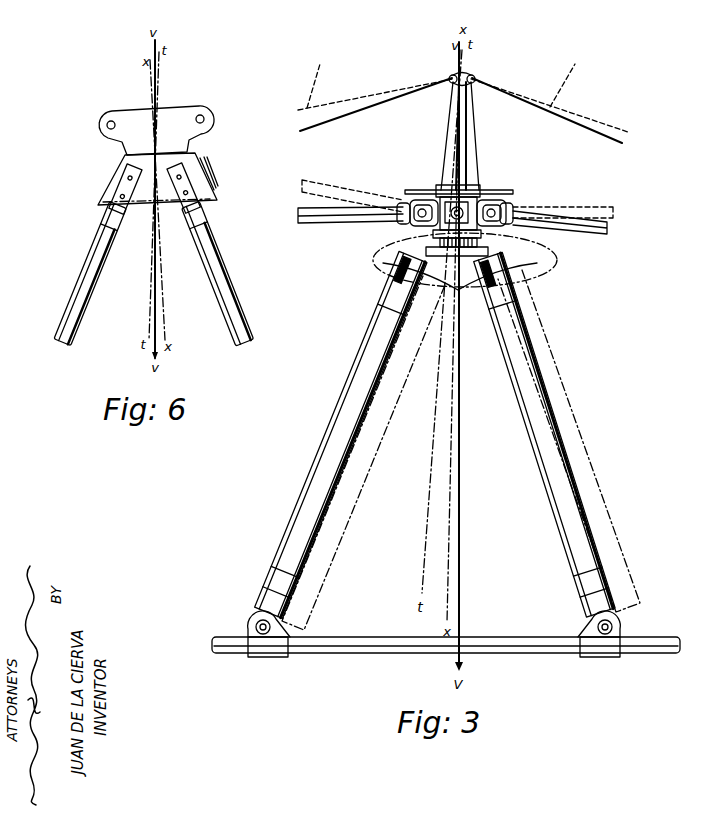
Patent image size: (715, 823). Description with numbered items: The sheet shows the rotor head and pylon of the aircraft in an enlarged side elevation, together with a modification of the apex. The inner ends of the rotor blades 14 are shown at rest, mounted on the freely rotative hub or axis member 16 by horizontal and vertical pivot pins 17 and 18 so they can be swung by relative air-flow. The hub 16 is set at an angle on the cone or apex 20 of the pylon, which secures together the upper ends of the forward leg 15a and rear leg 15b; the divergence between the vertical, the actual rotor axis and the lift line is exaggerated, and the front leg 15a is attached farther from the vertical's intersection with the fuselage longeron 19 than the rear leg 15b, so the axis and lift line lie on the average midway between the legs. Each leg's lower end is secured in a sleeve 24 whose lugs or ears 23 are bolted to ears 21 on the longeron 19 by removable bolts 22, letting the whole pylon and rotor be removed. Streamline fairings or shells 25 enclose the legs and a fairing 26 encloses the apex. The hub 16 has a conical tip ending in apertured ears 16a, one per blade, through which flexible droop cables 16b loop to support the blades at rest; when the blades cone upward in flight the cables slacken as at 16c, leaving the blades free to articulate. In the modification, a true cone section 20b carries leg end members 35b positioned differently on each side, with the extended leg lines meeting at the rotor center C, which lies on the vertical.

In FIG. 3, the rotative sustaining wings or blades 14 is at (325, 222).
In FIG. 3, the forward leg of the pylon 15a is at (389, 329).
In FIG. 3, the rear leg of the pylon 15b is at (518, 352).
In FIG. 3, the rotor hub or axis member 16 is at (472, 168).
In FIG. 6, the rotor hub or axis member 16 is at (174, 118).
In FIG. 3, the apertured ears 16a is at (549, 68).
In FIG. 3, the flexible droop cables 16b is at (343, 116).
In FIG. 3, the slackened cable position 16c is at (316, 72).
In FIG. 3, the horizontal pivot pin 17 is at (412, 200).
In FIG. 3, the vertical pivot pin 18 is at (419, 205).
In FIG. 3, the center of the rotor C is at (462, 210).
In FIG. 6, the center of the rotor C is at (153, 124).
In FIG. 3, the fuselage longeron 19 is at (530, 652).
In FIG. 3, the cone or apex of the pylon 20 is at (553, 268).
In FIG. 6, the true cone section 20b is at (110, 188).
In FIG. 3, the ears 21 is at (262, 656).
In FIG. 3, the removable bolts 22 is at (254, 624).
In FIG. 3, the lugs or ears of sleeves 23 is at (258, 614).
In FIG. 3, the sleeves 24 is at (270, 598).
In FIG. 3, the streamline fairings or shells for the pylon legs 25 is at (350, 404).
In FIG. 3, the streamline fairing or shell for the apex member 26 is at (392, 258).
In FIG. 6, the leg end members 35b is at (274, 218).